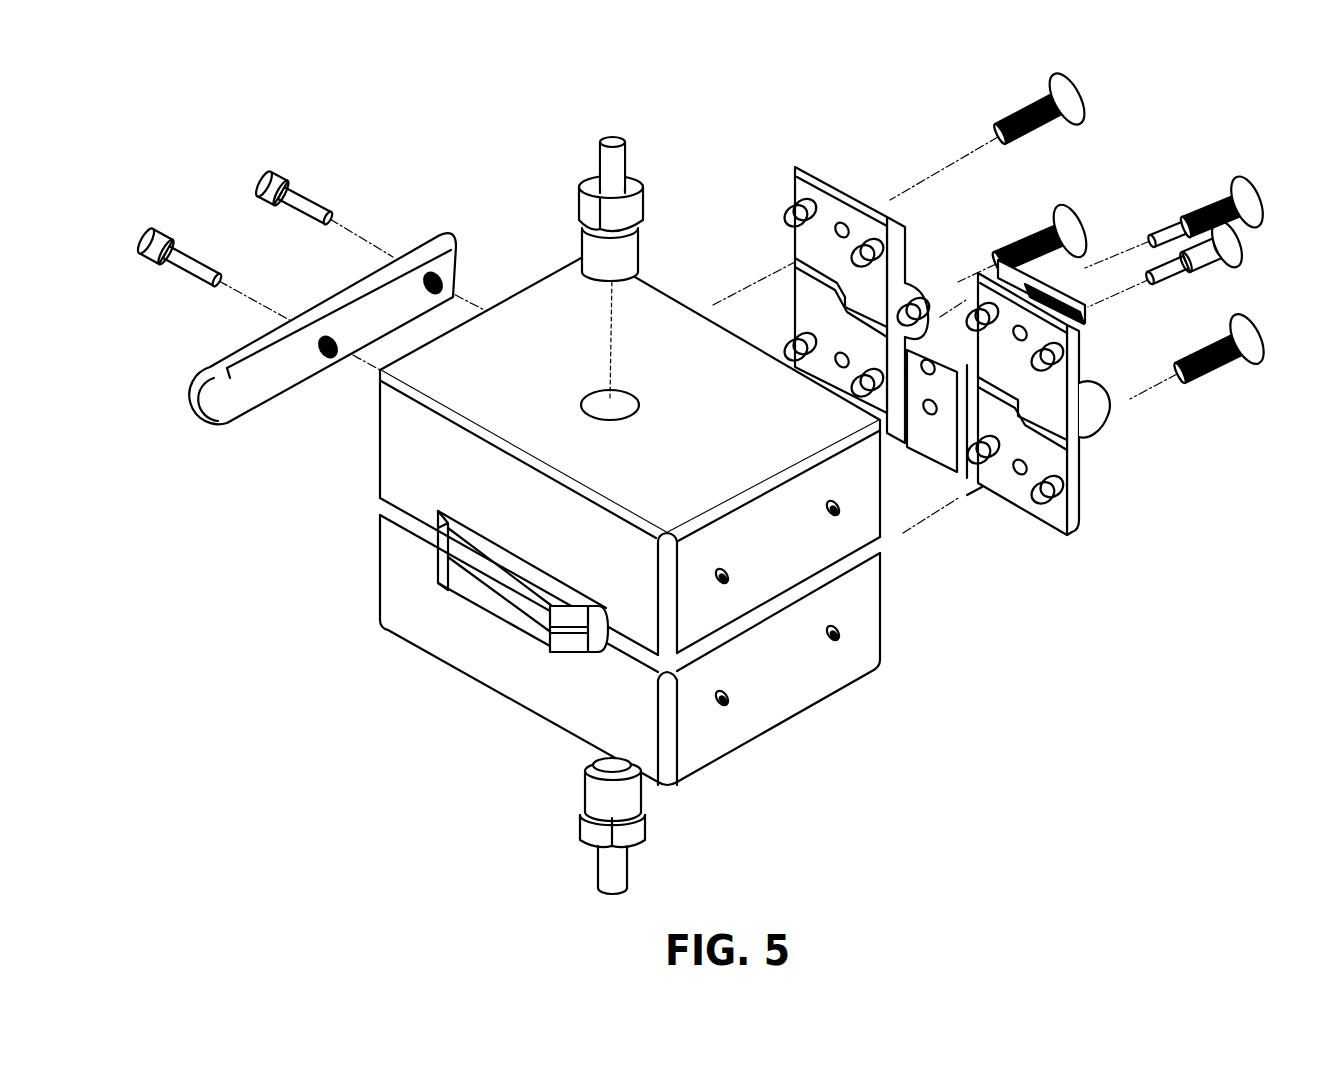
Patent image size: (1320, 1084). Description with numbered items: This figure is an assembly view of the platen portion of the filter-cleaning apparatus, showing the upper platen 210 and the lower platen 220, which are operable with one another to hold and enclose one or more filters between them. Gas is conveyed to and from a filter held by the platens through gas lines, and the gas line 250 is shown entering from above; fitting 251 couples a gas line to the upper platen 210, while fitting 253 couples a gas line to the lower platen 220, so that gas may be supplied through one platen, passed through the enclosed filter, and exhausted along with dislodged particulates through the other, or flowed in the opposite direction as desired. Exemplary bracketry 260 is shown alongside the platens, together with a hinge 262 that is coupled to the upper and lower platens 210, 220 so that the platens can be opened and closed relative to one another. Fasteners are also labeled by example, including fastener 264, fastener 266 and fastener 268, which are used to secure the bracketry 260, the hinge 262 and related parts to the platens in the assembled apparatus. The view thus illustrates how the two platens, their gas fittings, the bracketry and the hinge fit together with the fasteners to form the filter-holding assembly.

The upper platen 210 is at (382, 462).
The lower platen 220 is at (382, 582).
The gas line 250 is at (641, 218).
The fitting 251 is at (643, 208).
The fitting 253 is at (582, 805).
The bracketry 260 is at (323, 382).
The hinge 262 is at (827, 163).
The fastener 264 is at (1182, 210).
The fastener 266 is at (307, 183).
The fastener 268 is at (1077, 80).